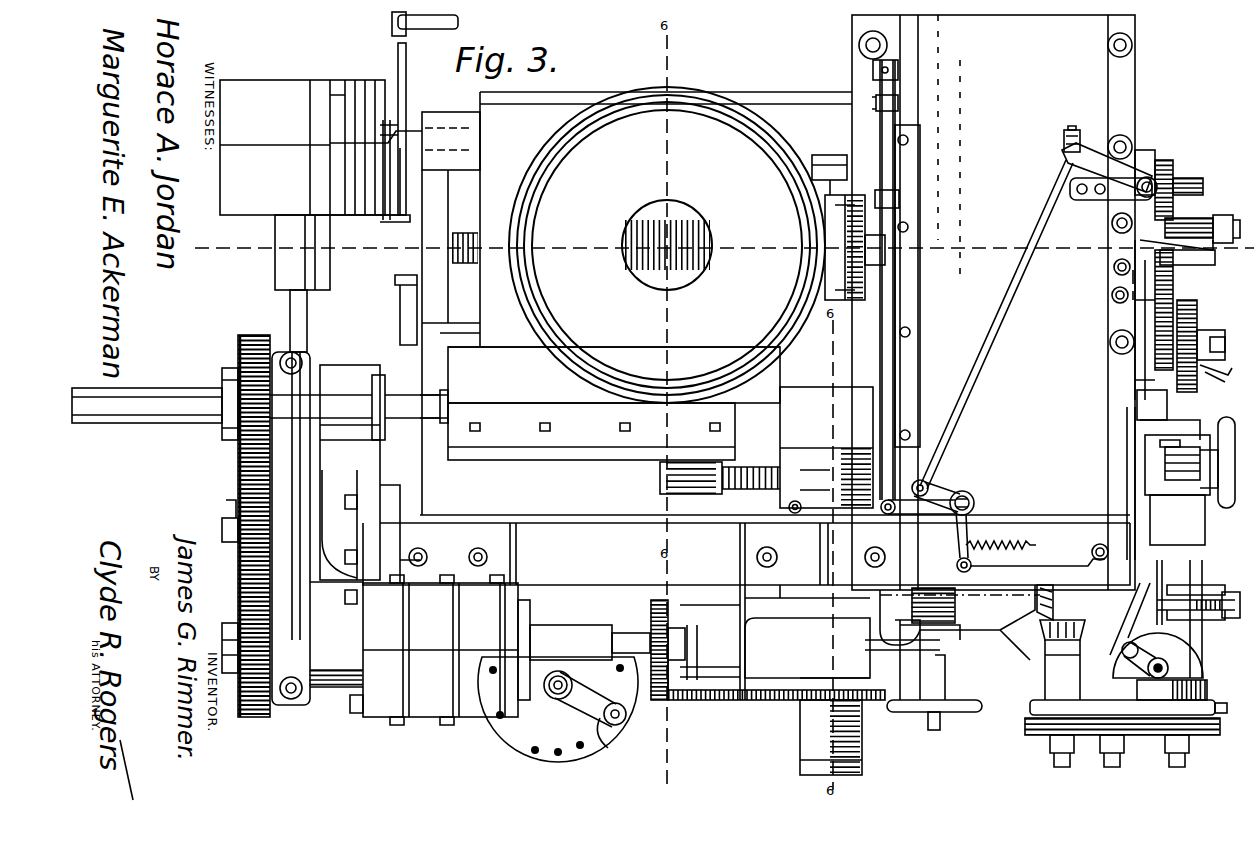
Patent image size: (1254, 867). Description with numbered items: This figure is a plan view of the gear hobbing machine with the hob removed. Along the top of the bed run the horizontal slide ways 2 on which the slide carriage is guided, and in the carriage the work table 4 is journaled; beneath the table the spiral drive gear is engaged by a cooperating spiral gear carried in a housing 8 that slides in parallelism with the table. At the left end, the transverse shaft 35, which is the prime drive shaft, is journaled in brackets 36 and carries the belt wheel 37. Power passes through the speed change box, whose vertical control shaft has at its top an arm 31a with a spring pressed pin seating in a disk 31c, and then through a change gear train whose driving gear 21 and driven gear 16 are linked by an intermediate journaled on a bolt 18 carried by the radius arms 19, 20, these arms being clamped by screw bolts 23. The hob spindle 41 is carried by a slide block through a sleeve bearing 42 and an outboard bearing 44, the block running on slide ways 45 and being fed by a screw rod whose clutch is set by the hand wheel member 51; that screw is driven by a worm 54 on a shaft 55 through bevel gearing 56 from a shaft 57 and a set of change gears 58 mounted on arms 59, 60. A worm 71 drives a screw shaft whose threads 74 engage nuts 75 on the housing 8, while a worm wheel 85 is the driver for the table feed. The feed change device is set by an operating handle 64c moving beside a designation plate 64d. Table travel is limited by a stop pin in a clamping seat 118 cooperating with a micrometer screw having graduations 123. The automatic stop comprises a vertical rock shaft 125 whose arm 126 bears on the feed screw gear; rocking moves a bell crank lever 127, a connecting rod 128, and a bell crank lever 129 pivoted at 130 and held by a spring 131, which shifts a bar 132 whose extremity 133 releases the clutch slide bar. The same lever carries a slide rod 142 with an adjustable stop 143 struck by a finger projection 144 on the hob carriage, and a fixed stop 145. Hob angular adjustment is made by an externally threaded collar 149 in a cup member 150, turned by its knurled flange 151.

The horizontal slide ways 2 is at (457, 128).
The work table 4 is at (1233, 282).
The housing 8 is at (557, 462).
The driving gear 16 is at (240, 346).
The bolt 18 is at (222, 530).
The radius arm 19 is at (303, 490).
The radius arm 20 is at (295, 576).
The driving gear 21 is at (260, 718).
The screw bolts 23 is at (303, 362).
The arm 31a is at (606, 740).
The disk 31c is at (505, 752).
The transverse shaft 35 is at (290, 313).
The brackets 36 is at (275, 270).
The belt wheel 37 is at (330, 84).
The hob spindle 41 is at (863, 752).
The sleeve bearing 42 is at (835, 420).
The outboard bearing 44 is at (830, 158).
The slide ways 45 is at (942, 280).
The hand wheel member 51 is at (956, 714).
The worm 54 is at (912, 605).
The shaft 55 is at (957, 622).
The bevel gearing 56 is at (1055, 612).
The shaft 57 is at (1045, 665).
The change gears 58 is at (1175, 752).
The arm 59 is at (1116, 704).
The arm 60 is at (1215, 705).
The operating handle 64c is at (1195, 653).
The designation plate 64d is at (1196, 672).
The worm 71 is at (1165, 470).
The threads 74 is at (760, 490).
The nuts 75 is at (662, 492).
The worm wheel 85 is at (1137, 410).
The clamping seat 118 is at (862, 262).
The graduations 123 is at (1196, 232).
The vertical rock shaft 125 is at (1160, 158).
The arm 126 is at (1182, 178).
The bell crank lever 127 is at (1080, 160).
The connecting rod 128 is at (1004, 306).
The bell crank lever 129 is at (934, 490).
The pivot 130 is at (973, 499).
The spring 131 is at (986, 543).
The bar 132 is at (1040, 565).
The extremity 133 is at (1097, 548).
The slide rod 142 is at (962, 211).
The adjustable stop 143 is at (898, 100).
The finger projection 144 is at (899, 200).
The fixed stop 145 is at (895, 66).
The externally threaded collar 149 is at (672, 702).
The cup member 150 is at (726, 702).
The knurled flange 151 is at (650, 606).